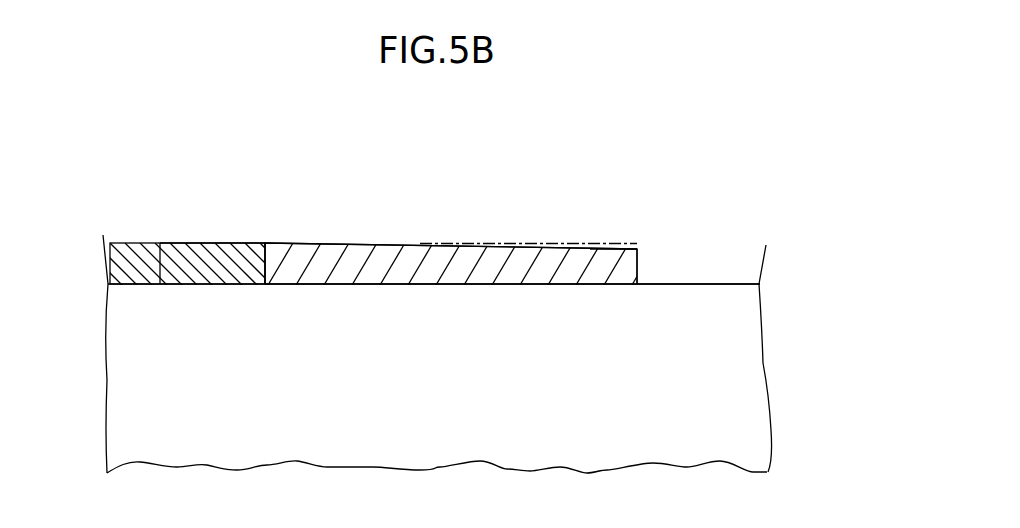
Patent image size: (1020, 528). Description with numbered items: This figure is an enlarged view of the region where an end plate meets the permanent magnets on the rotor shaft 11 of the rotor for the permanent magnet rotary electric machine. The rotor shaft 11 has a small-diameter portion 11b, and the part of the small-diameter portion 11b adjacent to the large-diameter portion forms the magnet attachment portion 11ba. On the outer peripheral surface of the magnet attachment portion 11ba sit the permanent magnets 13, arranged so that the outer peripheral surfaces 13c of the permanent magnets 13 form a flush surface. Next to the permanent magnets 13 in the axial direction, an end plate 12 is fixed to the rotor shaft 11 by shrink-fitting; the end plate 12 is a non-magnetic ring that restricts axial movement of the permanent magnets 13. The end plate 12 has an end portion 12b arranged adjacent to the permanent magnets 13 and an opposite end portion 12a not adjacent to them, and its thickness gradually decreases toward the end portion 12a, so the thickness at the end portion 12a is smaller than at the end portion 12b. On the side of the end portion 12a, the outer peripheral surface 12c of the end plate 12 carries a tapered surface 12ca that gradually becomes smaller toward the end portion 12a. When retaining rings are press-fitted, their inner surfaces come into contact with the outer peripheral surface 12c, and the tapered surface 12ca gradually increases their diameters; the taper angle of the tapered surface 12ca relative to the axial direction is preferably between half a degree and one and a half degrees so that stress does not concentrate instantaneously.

The rotor shaft 11 is at (732, 277).
The small-diameter portion 11b is at (698, 283).
The magnet attachment portion 11ba is at (195, 283).
The permanent magnet 13 is at (162, 236).
The outer peripheral surface of permanent magnet 13c is at (228, 243).
The end plate 12 is at (332, 235).
The end portion 12a is at (636, 268).
The end portion 12b is at (263, 250).
The outer peripheral surface 12c is at (361, 243).
The tapered surface 12ca is at (503, 246).